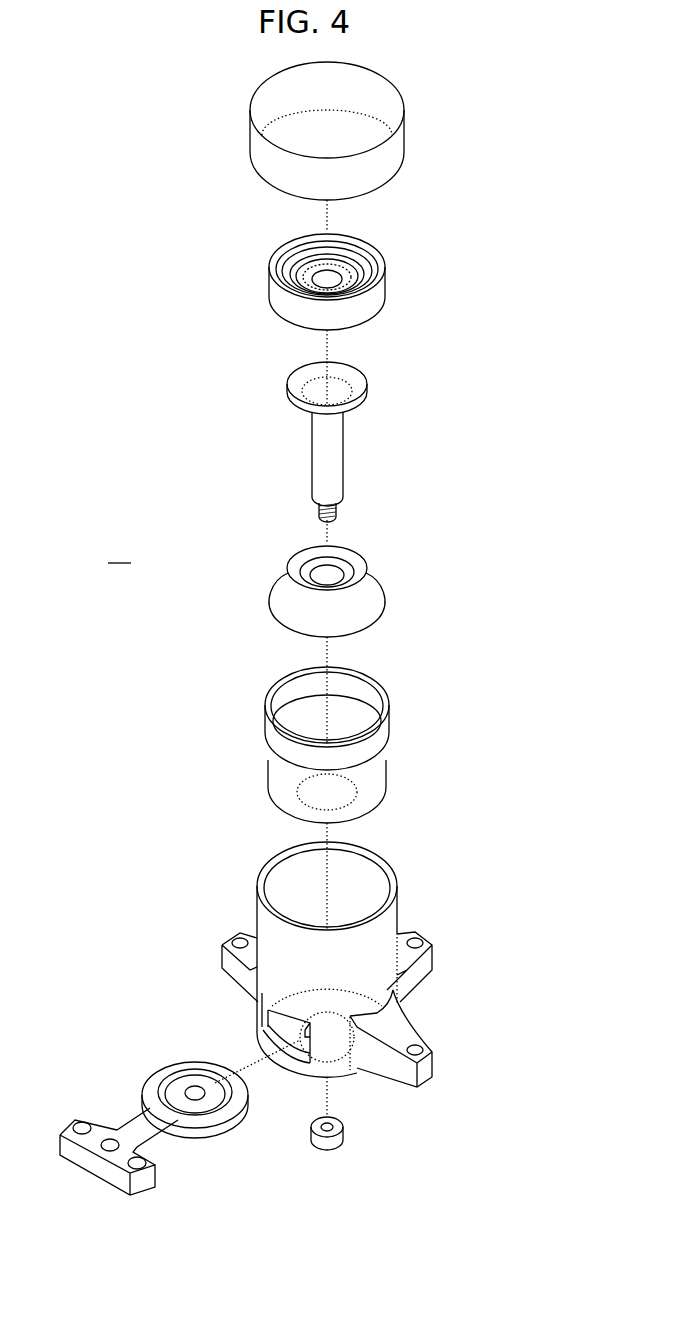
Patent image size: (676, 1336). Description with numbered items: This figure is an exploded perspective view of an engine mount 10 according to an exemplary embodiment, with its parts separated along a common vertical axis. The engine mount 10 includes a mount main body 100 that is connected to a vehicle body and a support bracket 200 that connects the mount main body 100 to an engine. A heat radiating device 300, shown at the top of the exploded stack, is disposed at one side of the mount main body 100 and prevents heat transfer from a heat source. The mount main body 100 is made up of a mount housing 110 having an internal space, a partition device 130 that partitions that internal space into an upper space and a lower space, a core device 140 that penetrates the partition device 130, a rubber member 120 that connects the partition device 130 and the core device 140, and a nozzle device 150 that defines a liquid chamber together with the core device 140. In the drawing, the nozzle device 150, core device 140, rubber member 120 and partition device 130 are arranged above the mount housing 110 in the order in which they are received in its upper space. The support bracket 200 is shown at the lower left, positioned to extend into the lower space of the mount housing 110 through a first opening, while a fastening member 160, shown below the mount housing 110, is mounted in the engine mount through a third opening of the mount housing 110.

The engine mount 10 is at (119, 553).
The mount main body 100 is at (505, 290).
The mount housing 110 is at (377, 963).
The rubber member 120 is at (378, 598).
The partition device 130 is at (378, 772).
The core device 140 is at (336, 447).
The nozzle device 150 is at (378, 298).
The fastening member 160 is at (345, 1135).
The support bracket 200 is at (150, 1085).
The heat radiating device 300 is at (388, 152).